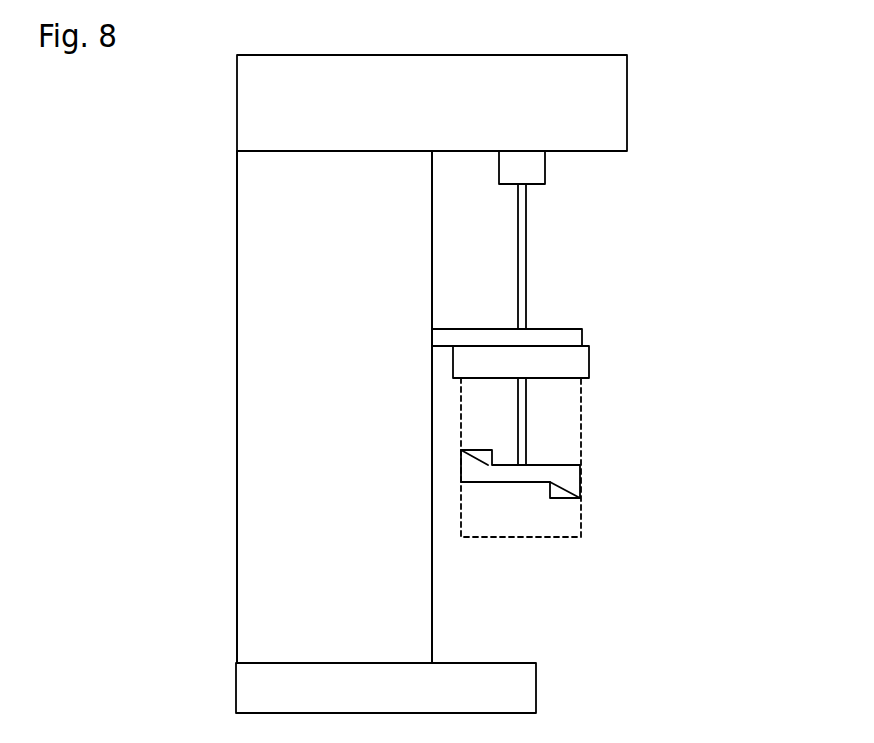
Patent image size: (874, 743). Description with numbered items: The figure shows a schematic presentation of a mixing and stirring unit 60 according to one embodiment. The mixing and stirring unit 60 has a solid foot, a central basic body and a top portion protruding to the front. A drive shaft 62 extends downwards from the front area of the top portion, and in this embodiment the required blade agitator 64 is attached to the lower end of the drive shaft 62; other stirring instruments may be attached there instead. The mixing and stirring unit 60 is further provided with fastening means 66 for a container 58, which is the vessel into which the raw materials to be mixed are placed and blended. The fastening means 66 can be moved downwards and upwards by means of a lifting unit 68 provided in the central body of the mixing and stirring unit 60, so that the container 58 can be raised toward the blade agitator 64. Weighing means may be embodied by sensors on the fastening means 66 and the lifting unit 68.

The container 58 is at (581, 425).
The mixing and stirring unit 60 is at (643, 103).
The drive shaft 62 is at (528, 204).
The blade agitator 64 is at (550, 474).
The fastening means 66 is at (517, 340).
The lifting unit 68 is at (355, 330).